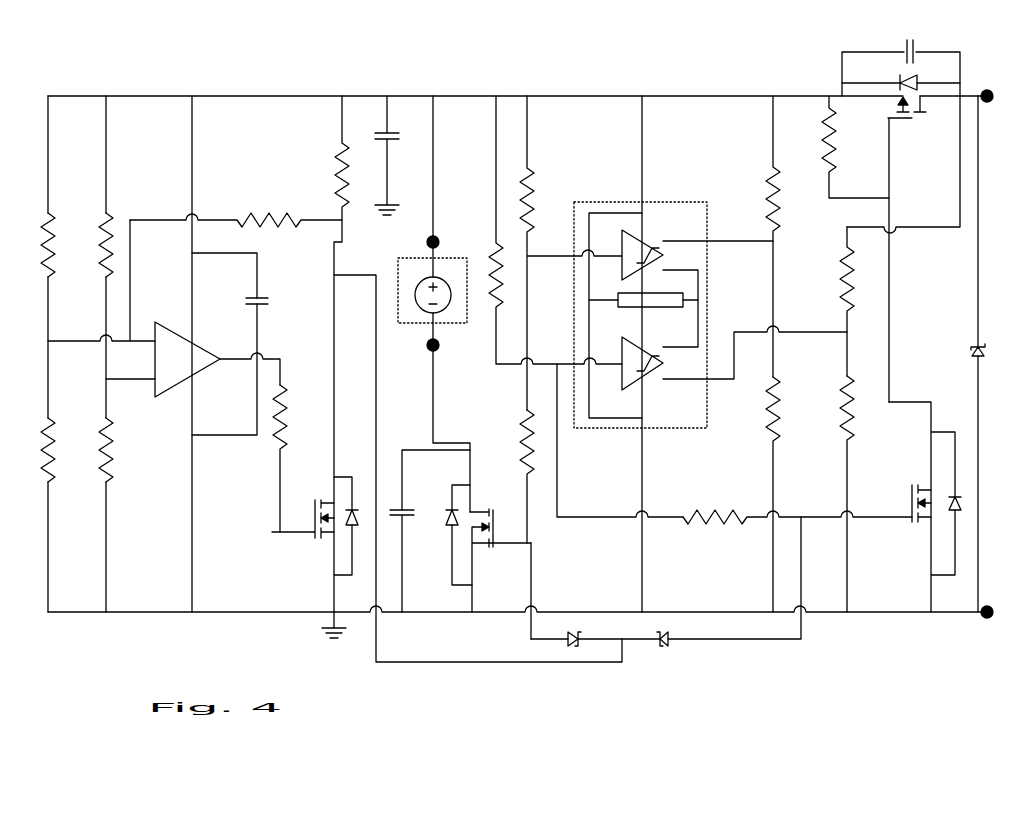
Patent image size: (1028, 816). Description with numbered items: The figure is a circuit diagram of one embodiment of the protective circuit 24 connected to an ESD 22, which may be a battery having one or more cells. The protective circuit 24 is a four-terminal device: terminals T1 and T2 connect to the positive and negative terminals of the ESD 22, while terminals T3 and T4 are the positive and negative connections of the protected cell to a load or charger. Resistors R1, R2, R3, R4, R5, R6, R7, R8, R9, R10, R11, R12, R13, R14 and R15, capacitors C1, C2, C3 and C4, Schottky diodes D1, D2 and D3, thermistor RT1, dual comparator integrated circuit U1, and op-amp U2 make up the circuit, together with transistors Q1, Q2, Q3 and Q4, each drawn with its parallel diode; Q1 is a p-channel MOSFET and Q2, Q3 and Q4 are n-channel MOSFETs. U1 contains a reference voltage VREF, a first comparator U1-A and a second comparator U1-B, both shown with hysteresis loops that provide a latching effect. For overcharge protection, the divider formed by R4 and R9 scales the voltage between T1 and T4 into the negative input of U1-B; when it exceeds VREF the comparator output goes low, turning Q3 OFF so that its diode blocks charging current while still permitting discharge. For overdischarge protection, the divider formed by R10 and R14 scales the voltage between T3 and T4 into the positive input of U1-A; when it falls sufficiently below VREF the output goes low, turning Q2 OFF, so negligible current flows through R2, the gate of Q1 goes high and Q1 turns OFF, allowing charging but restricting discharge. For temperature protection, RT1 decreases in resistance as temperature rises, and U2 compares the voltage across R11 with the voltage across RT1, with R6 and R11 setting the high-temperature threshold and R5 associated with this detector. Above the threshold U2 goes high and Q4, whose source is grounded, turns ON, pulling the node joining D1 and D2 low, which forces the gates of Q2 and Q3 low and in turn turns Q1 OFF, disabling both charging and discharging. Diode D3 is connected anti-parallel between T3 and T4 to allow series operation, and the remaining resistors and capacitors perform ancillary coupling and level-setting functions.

The ESD 22 is at (432, 296).
The protective circuit 24 is at (907, 666).
The resistor R1 is at (332, 354).
The resistor R2 is at (855, 147).
The resistor R3 is at (571, 253).
The resistor R4 is at (758, 236).
The resistor R5 is at (55, 237).
The resistor R6 is at (115, 237).
The resistor R7 is at (236, 206).
The resistor R8 is at (541, 230).
The resistor R9 is at (757, 494).
The resistor R10 is at (827, 301).
The resistor R11 is at (125, 450).
The resistor R12 is at (298, 458).
The resistor R13 is at (505, 471).
The resistor R14 is at (862, 494).
The resistor R15 is at (797, 532).
The thermistor RT1 is at (60, 458).
The capacitor C1 is at (398, 155).
The capacitor C2 is at (901, 126).
The capacitor C3 is at (430, 531).
The capacitor C4 is at (268, 305).
The p-channel MOSFET Q1 is at (901, 238).
The n-channel MOSFET Q2 is at (925, 507).
The n-channel MOSFET Q3 is at (488, 548).
The n-channel MOSFET Q4 is at (315, 526).
The Schottky diode D1 is at (586, 634).
The Schottky diode D2 is at (672, 633).
The anti-parallel diode D3 is at (964, 354).
The dual comparator integrated circuit U1 is at (710, 315).
The first comparator U1-A is at (634, 363).
The second comparator U1-B is at (634, 255).
The reference voltage VREF is at (643, 299).
The op-amp U2 is at (188, 359).
The terminal T1 is at (441, 172).
The terminal T2 is at (441, 341).
The terminal T3 is at (983, 84).
The terminal T4 is at (983, 624).